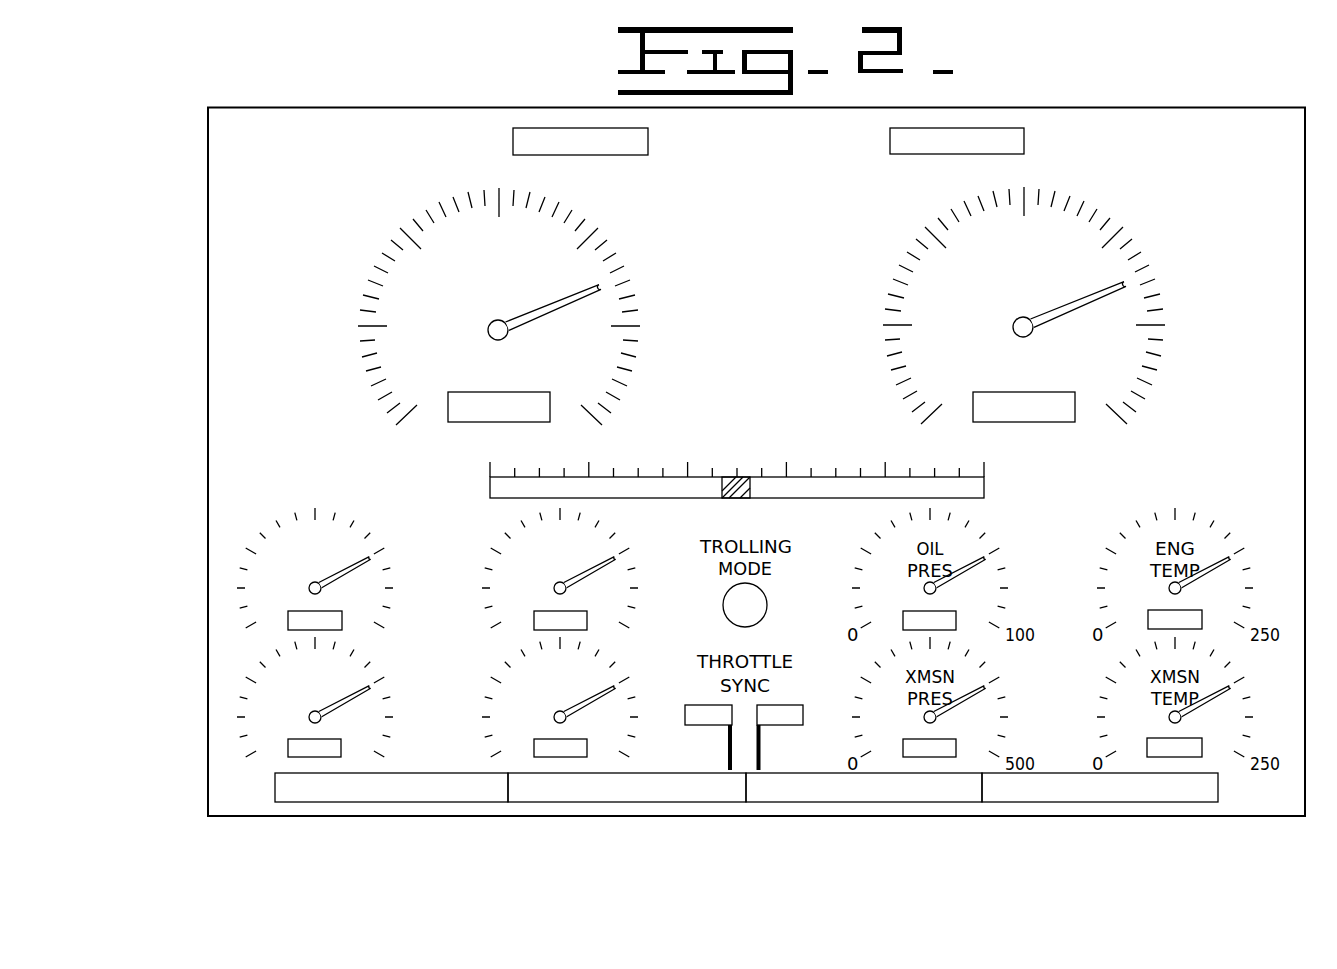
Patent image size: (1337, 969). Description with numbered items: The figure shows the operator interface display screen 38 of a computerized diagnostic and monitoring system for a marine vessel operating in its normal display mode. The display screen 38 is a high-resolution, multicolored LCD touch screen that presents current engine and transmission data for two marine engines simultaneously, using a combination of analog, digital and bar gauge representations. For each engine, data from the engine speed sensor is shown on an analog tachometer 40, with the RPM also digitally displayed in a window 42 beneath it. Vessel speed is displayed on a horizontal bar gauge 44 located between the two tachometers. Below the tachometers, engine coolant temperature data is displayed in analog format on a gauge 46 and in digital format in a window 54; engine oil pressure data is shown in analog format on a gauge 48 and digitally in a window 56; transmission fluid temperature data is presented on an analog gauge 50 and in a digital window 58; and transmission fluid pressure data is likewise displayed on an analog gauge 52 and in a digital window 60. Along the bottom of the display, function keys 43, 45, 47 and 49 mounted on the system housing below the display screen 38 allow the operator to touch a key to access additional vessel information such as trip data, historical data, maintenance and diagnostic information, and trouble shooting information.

The operator interface display screen 38 is at (1092, 103).
The analog tachometer 40 is at (363, 293).
The window 42 is at (448, 402).
The function key 43 is at (326, 792).
The bar gauge 44 is at (490, 489).
The function key 45 is at (645, 790).
The gauge 46 is at (315, 576).
The function key 47 is at (843, 790).
The gauge 48 is at (555, 576).
The function key 49 is at (1057, 790).
The gauge 50 is at (288, 722).
The gauge 52 is at (541, 746).
The window 54 is at (288, 617).
The window 56 is at (574, 611).
The window 58 is at (288, 747).
The window 60 is at (534, 757).